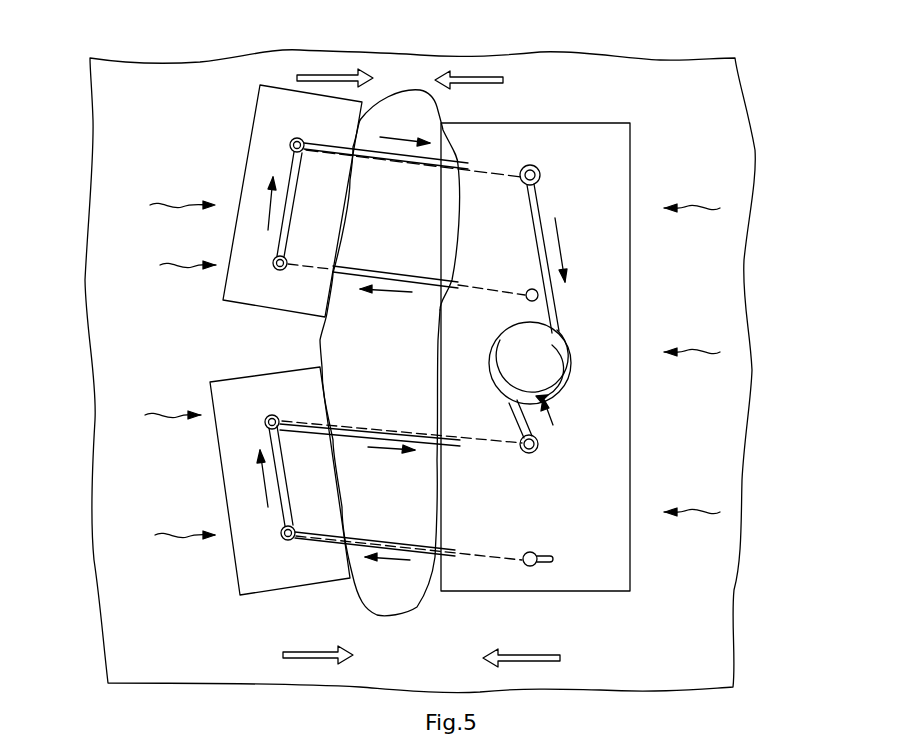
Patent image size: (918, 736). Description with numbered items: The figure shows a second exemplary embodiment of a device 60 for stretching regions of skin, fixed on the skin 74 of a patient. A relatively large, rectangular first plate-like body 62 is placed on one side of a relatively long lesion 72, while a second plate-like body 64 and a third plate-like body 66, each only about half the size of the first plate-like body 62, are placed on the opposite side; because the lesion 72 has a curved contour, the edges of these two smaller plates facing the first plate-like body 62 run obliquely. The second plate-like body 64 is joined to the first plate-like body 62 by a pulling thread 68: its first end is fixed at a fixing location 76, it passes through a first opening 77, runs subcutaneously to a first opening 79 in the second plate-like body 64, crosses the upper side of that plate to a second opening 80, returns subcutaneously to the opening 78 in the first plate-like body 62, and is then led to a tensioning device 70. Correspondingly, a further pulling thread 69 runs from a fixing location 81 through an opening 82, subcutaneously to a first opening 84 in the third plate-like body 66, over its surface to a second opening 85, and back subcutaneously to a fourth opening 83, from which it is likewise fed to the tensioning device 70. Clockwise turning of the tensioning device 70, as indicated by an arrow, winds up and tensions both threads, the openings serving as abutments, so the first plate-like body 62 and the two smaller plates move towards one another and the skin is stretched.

The device 60 is at (678, 127).
The first plate-like body 62 is at (592, 135).
The second plate-like body 64 is at (245, 563).
The third plate-like body 66 is at (262, 148).
The pulling thread 68 is at (477, 557).
The further pulling thread 69 is at (470, 160).
The tensioning device 70 is at (558, 360).
The lesion 72 is at (380, 577).
The skin 74 is at (685, 653).
The fixing location 76 is at (550, 556).
The first opening 77 is at (528, 552).
The opening 78 is at (540, 450).
The first opening 79 is at (288, 540).
The second opening 80 is at (270, 415).
The fixing location 81 is at (545, 305).
The opening 82 is at (530, 289).
The fourth opening 83 is at (540, 168).
The first opening 84 is at (278, 265).
The second opening 85 is at (295, 138).